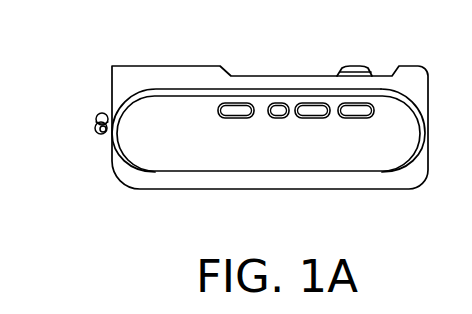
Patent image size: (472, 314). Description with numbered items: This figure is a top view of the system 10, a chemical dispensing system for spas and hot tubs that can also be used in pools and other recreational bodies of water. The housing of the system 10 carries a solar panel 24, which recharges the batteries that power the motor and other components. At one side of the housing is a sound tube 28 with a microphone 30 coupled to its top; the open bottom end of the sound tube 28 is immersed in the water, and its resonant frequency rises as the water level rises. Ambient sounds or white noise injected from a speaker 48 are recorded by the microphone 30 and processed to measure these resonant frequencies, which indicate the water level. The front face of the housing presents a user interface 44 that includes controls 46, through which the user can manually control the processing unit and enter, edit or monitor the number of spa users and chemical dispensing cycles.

The system 10 is at (271, 39).
The solar panel 24 is at (385, 153).
The sound tube 28 is at (95, 133).
The microphone 30 is at (97, 103).
The user interface 44 is at (223, 135).
The controls 46 is at (354, 120).
The speaker 48 is at (96, 123).